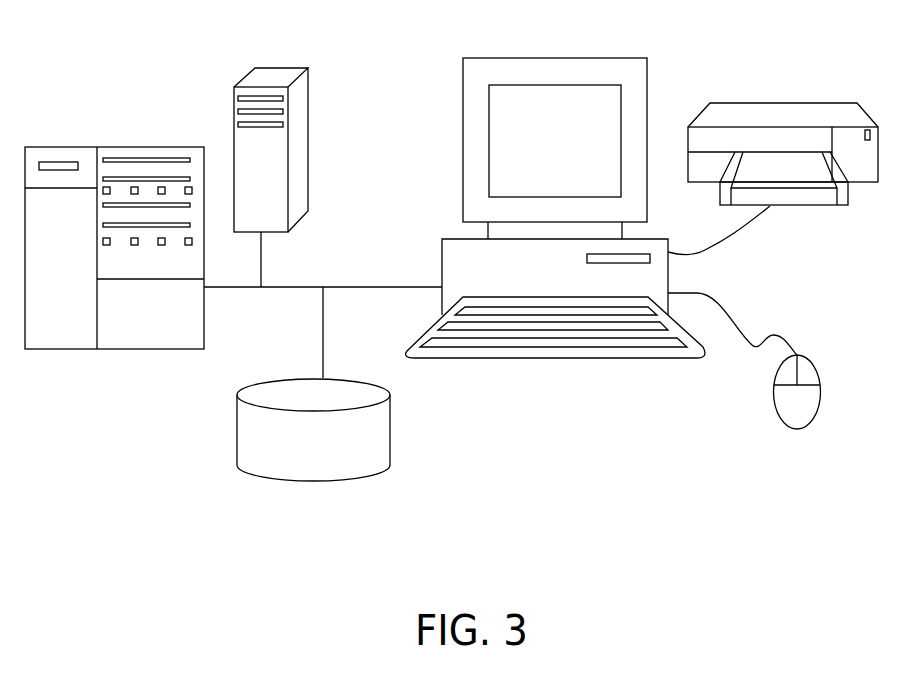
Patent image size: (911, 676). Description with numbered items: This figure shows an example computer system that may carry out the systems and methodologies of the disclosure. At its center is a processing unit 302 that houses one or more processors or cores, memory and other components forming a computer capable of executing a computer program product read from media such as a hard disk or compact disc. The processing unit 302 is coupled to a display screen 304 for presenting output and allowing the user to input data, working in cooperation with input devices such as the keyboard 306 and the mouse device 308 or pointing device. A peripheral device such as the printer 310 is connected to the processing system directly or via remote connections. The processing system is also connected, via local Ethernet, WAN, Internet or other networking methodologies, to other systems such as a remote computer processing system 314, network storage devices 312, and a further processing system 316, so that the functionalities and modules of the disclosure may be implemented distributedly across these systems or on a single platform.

The processing unit 302 is at (450, 262).
The display screen 304 is at (570, 58).
The keyboard 306 is at (598, 358).
The mouse device 308 is at (819, 403).
The printer 310 is at (790, 103).
The network storage devices 312 is at (237, 432).
The remote computer processing system 314 is at (342, 118).
The processing system 316 is at (164, 147).